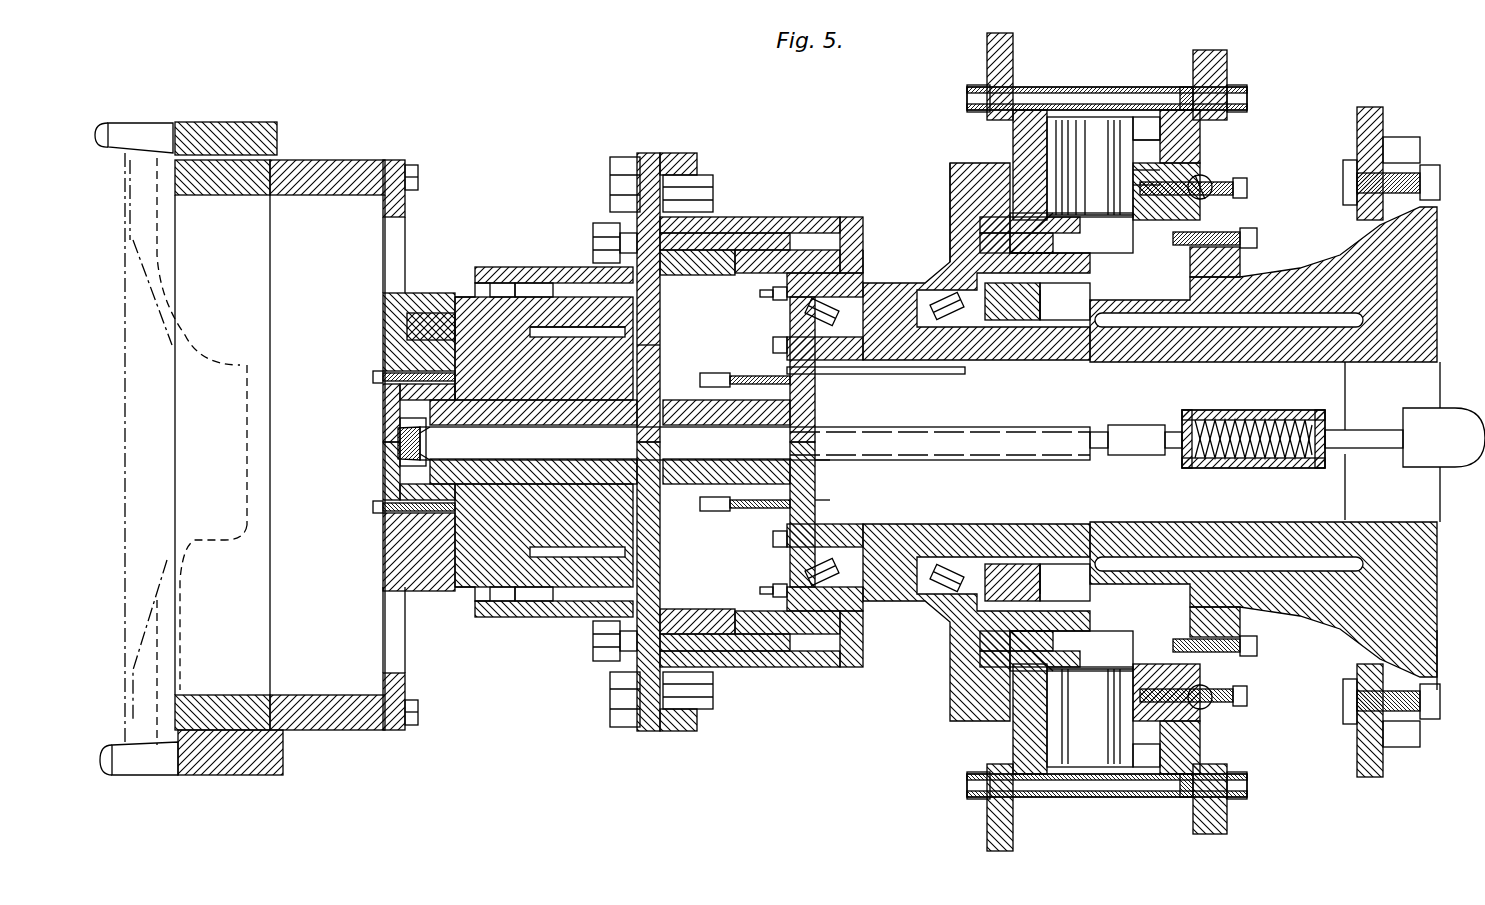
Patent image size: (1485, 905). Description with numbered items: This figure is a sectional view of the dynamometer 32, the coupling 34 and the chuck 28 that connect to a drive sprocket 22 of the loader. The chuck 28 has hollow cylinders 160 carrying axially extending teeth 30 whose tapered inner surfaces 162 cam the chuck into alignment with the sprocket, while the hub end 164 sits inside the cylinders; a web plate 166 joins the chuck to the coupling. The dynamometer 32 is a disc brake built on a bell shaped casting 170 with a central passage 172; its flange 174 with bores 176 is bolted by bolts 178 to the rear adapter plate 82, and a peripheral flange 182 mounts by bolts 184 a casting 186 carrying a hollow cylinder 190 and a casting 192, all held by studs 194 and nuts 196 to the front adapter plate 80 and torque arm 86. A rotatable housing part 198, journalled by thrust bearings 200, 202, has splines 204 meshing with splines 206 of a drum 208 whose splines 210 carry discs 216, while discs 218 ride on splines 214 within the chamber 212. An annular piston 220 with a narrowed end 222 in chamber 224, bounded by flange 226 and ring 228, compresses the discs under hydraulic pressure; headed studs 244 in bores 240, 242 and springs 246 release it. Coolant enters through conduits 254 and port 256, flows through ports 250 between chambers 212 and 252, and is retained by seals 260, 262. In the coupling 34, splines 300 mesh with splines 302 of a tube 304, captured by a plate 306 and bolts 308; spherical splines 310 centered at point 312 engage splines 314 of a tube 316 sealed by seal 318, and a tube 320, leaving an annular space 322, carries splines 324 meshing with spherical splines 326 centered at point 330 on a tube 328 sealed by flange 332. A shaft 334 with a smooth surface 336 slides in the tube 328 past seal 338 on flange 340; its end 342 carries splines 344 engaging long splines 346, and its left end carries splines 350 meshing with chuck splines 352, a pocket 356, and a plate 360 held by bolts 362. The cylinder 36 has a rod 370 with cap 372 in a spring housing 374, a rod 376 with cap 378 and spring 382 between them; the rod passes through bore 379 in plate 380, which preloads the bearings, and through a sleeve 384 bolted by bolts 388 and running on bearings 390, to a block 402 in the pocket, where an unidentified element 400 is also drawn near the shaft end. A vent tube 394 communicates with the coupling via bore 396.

The motive power output 22 is at (195, 340).
The releasable coupling 28 is at (375, 140).
The axially extending teeth 30 is at (135, 125).
The dynamometer 32 is at (942, 152).
The coupling 34 is at (568, 203).
The hydraulic cylinder 36 is at (1452, 408).
The front adapter plate 80 is at (990, 48).
The rear adapter plate 82 is at (1365, 112).
The torque arm 86 is at (1230, 65).
The hollow cylinder 160 is at (299, 163).
The radially inner surface 162 is at (100, 125).
The outer end of hub 164 is at (194, 635).
The web plate 166 is at (438, 577).
The bell shaped casting 170 is at (1325, 600).
The central passage 172 is at (1345, 364).
The outwardly directed flange 174 is at (1438, 665).
The bores 176 is at (1400, 750).
The bolts 178 is at (1432, 165).
The peripheral flange 182 is at (1240, 622).
The bolts 184 is at (1255, 275).
The casting 186 is at (1185, 95).
The hollow cylinder 190 is at (1030, 110).
The radially inwardly directed casting 192 is at (1015, 725).
The threaded studs 194 is at (1038, 100).
The nuts 196 is at (968, 790).
The relatively rotatable housing part 198 is at (885, 278).
The thrust bearing 200 is at (960, 325).
The thrust bearing 202 is at (835, 330).
The radially outwardly directed splines 204 is at (1004, 296).
The radially inwardly directed splines 206 is at (1064, 305).
The drum 208 is at (950, 232).
The radially outwardly directed splines 210 is at (1085, 235).
The annular chamber 212 is at (1110, 115).
The radially inwardly directed splines 214 is at (1085, 140).
The brake discs 216 is at (1160, 190).
The brake discs 218 is at (1110, 700).
The annular piston 220 is at (1150, 165).
The narrowed annular end 222 is at (1175, 185).
The annular chamber 224 is at (1185, 168).
The axially extending flange 226 is at (1145, 145).
The ring 228 is at (1205, 200).
The angularly spaced bores 240 is at (1233, 188).
The bores 242 is at (1150, 225).
The headed stud 244 is at (1250, 238).
The spring 246 is at (1215, 192).
The radially extending ports 250 is at (1090, 318).
The radially inner chamber 252 is at (1100, 590).
The internal conduits 254 is at (1240, 672).
The inlet port 256 is at (1245, 695).
The seal 260 is at (1060, 590).
The seal 262 is at (1002, 587).
The radially outwardly directed splines 300 is at (875, 610).
The radially inwardly directed splines 302 is at (840, 655).
The tube 304 is at (765, 678).
The plate 306 is at (790, 248).
The bolts 308 is at (773, 292).
The spherical splined surface 310 is at (835, 248).
The point 312 is at (940, 440).
The radially inwardly directed splines 314 is at (760, 248).
The tube 316 is at (742, 215).
The seal 318 is at (866, 248).
The tube 320 is at (540, 625).
The annular space 322 is at (662, 292).
The radially inwardly directed splines 324 is at (548, 620).
The spherical splined surface 326 is at (505, 620).
The tube 328 is at (580, 280).
The point 330 is at (755, 443).
The seal carrying flange 332 is at (462, 600).
The tube-like shaft 334 is at (447, 312).
The smooth cylindrical surface 336 is at (544, 348).
The seal 338 is at (544, 535).
The radially inwardly directed flange 340 is at (569, 535).
The righthand end 342 is at (679, 340).
The radially outwardly directed splines 344 is at (577, 347).
The radially inwardly directed splines 346 is at (572, 362).
The radially outwardly directed splines 350 is at (478, 385).
The radially inwardly directed splines 352 is at (395, 343).
The cylindrical pocket 356 is at (440, 485).
The plate 360 is at (383, 540).
The bolts 362 is at (373, 377).
The extendable rod 370 is at (1365, 450).
The cap 372 is at (1322, 468).
The spring housing 374 is at (1240, 410).
The rod 376 is at (1050, 432).
The cap 378 is at (1190, 468).
The seal carrying bore 379 is at (828, 462).
The plate 380 is at (815, 498).
The coil compression spring 382 is at (820, 375).
The elongated sleeve 384 is at (683, 488).
The bolts 388 is at (705, 372).
The bearings 390 is at (432, 445).
The vent tube 394 is at (940, 376).
The bore 396 is at (773, 345).
The nut 400 is at (398, 433).
The block 402 is at (398, 468).